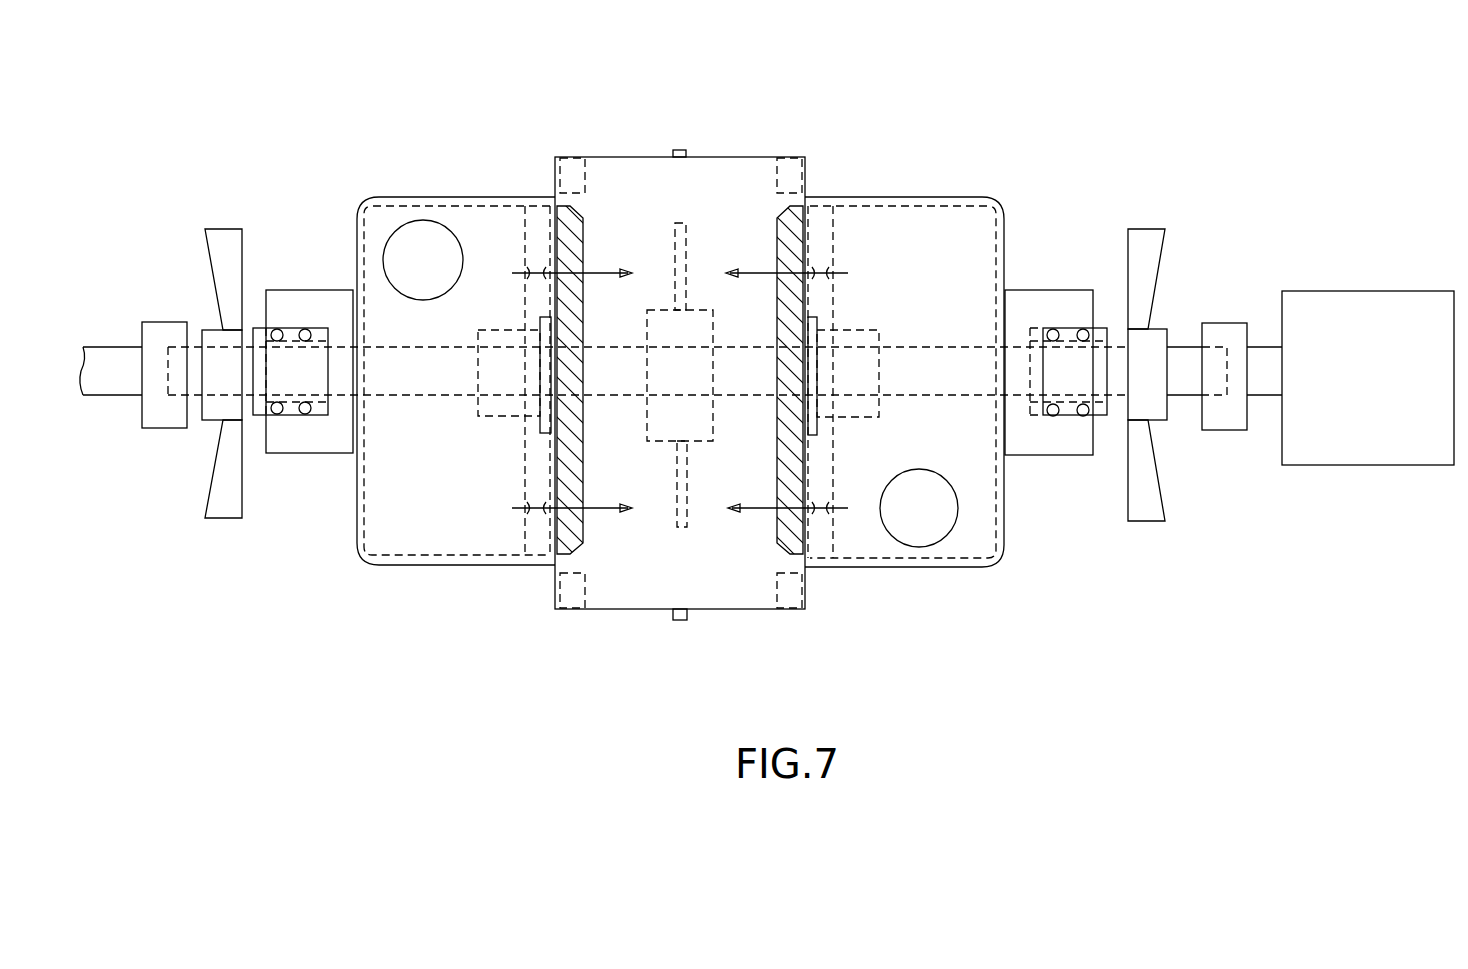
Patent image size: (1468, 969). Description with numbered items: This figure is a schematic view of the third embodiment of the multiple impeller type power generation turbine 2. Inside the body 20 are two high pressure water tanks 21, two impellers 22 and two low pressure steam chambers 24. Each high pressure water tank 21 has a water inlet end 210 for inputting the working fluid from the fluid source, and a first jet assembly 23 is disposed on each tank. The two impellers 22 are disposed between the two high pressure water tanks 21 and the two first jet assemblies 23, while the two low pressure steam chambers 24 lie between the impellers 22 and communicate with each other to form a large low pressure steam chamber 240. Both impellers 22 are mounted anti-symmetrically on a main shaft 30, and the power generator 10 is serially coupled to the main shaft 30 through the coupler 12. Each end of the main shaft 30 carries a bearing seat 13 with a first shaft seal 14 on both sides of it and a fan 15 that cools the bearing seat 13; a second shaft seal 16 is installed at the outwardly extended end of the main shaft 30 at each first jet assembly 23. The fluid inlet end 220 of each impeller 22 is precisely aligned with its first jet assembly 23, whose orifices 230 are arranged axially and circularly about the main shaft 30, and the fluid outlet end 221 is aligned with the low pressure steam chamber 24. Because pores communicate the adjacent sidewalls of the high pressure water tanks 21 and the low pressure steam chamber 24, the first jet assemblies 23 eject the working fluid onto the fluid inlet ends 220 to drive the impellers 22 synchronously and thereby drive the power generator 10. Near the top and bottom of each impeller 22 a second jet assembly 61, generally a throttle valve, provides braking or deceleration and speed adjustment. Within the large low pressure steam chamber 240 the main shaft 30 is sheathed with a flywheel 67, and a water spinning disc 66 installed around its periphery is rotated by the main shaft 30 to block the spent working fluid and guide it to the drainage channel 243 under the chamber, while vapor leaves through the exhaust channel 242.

The multiple impeller type power generation turbine 2 is at (1077, 182).
The power generator 10 is at (1370, 305).
The coupler 12 is at (153, 328).
The bearing seat 13 is at (289, 328).
The first shaft seal 14 is at (262, 325).
The fan 15 is at (220, 230).
The second shaft seal 16 is at (493, 410).
The body 20 is at (680, 380).
The high pressure water tank 21 is at (373, 507).
The water inlet end 210 is at (428, 228).
The impeller 22 is at (677, 335).
The fluid inlet end 220 is at (557, 230).
The fluid outlet end 221 is at (583, 233).
The first jet assembly 23 is at (537, 540).
The orifice 230 is at (528, 272).
The low pressure steam chamber 24 is at (673, 373).
The large low pressure steam chamber 240 is at (705, 190).
The exhaust channel 242 is at (687, 148).
The drainage channel 243 is at (676, 622).
The main shaft 30 is at (1182, 374).
The second jet assembly 61 is at (568, 165).
The water spinning disc 66 is at (680, 220).
The flywheel 67 is at (663, 430).